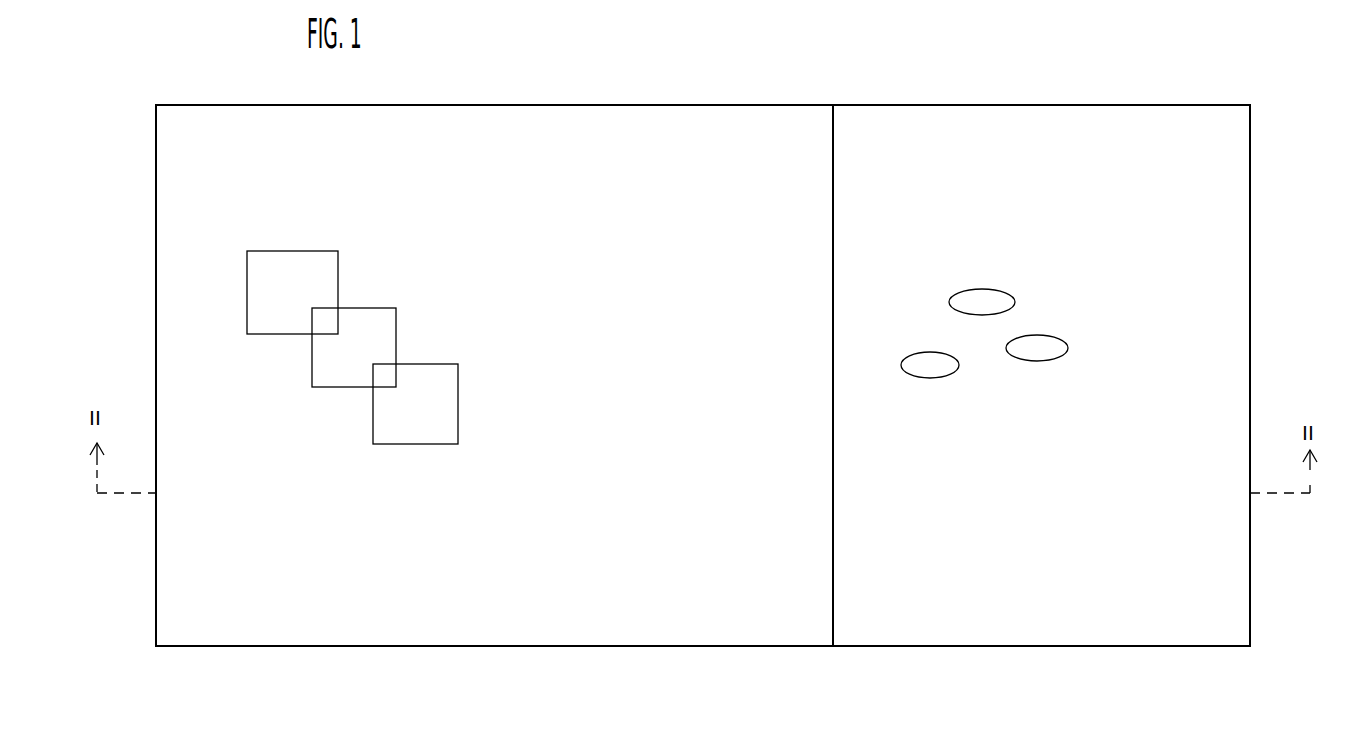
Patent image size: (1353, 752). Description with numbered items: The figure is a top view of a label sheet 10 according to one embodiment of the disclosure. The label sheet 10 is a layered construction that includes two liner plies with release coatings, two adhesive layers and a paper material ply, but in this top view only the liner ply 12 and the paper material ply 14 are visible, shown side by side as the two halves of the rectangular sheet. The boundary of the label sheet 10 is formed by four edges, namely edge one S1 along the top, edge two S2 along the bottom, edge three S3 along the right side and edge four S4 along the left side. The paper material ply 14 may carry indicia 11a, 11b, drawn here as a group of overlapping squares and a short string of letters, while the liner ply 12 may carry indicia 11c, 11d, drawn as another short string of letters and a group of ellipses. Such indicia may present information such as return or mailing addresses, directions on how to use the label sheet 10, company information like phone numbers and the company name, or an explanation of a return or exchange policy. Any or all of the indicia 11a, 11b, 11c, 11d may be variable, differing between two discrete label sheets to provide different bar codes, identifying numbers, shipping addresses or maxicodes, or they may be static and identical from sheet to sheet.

The label sheet 10 is at (872, 79).
The indicia 11a is at (343, 357).
The indicia 11b is at (508, 393).
The indicia 11c is at (1055, 603).
The indicia 11d is at (1028, 310).
The liner ply 12 is at (1187, 348).
The paper material ply 14 is at (359, 604).
The edge one S1 is at (618, 100).
The edge two S2 is at (468, 653).
The edge three S3 is at (1257, 237).
The edge four S4 is at (150, 248).